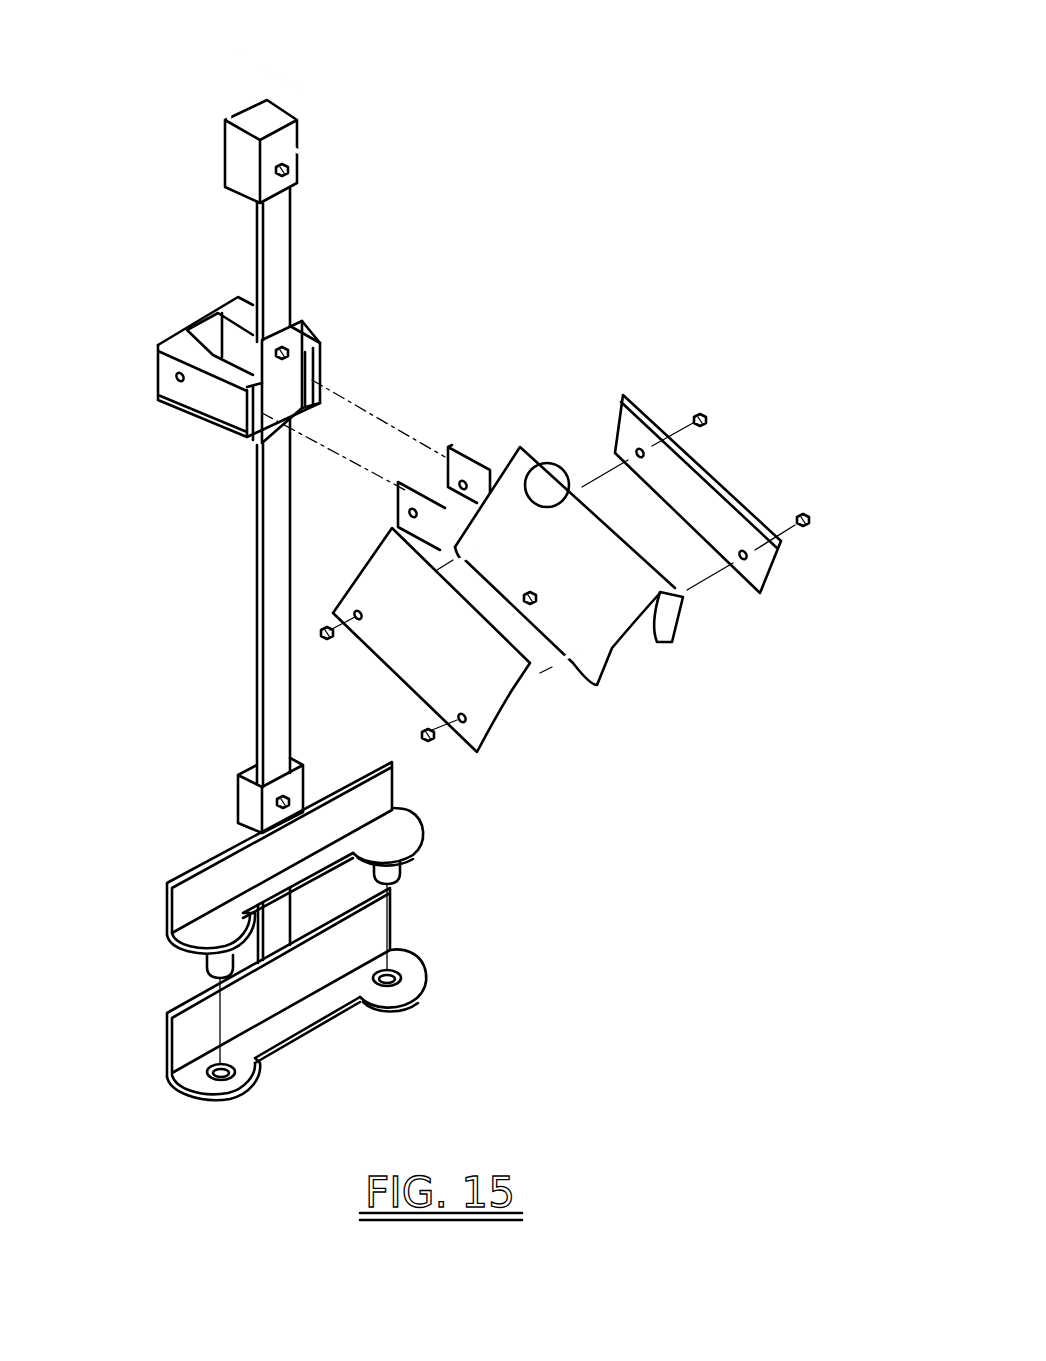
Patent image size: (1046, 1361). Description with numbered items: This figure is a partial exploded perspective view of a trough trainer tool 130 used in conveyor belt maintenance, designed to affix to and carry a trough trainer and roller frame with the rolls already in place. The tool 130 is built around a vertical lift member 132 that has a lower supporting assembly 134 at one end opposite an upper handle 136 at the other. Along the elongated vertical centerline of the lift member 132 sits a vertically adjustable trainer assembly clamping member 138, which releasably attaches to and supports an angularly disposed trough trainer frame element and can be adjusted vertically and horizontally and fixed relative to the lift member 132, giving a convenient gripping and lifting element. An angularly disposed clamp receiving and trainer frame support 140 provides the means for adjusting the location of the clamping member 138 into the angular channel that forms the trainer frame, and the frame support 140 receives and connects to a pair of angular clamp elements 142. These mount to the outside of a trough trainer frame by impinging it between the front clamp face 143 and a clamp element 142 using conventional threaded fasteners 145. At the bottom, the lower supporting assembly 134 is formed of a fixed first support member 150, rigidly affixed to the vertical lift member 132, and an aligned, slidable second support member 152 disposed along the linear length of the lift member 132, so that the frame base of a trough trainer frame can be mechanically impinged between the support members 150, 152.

The trough trainer tool 130 is at (703, 990).
The vertical lift member 132 is at (273, 273).
The lower supporting assembly 134 is at (288, 943).
The upper handle 136 is at (283, 72).
The trainer assembly clamping member 138 is at (540, 541).
The clamp receiving and trainer frame support 140 is at (467, 457).
The angular clamp elements 142 is at (650, 408).
The front clamp face 143 is at (553, 487).
The threaded fasteners 145 is at (333, 640).
The first support member 150 is at (412, 980).
The second support member 152 is at (385, 827).